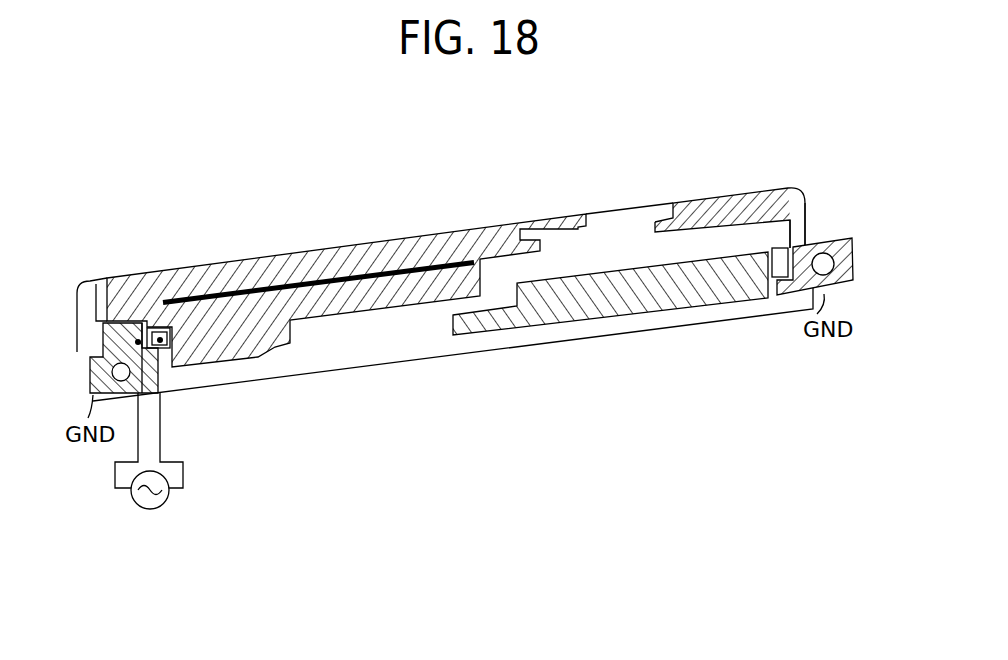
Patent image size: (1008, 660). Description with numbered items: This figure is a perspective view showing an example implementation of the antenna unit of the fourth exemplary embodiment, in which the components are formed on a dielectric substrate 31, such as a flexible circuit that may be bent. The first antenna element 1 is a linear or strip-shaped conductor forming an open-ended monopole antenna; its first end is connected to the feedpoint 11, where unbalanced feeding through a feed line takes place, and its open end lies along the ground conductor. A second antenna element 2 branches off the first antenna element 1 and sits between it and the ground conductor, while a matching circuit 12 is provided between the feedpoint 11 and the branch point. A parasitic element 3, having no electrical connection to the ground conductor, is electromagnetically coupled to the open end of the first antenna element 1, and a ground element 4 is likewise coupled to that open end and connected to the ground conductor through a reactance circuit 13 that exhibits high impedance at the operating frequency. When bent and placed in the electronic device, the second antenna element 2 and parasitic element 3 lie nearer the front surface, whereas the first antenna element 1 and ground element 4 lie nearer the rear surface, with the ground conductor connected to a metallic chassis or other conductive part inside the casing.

The first antenna element 1 is at (253, 267).
The second antenna element 2 is at (408, 280).
The parasitic element 3 is at (647, 292).
The ground element 4 is at (718, 198).
The feedpoint 11 is at (148, 510).
The matching circuit 12 is at (170, 335).
The reactance circuit 13 is at (807, 228).
The dielectric substrate 31 is at (358, 352).